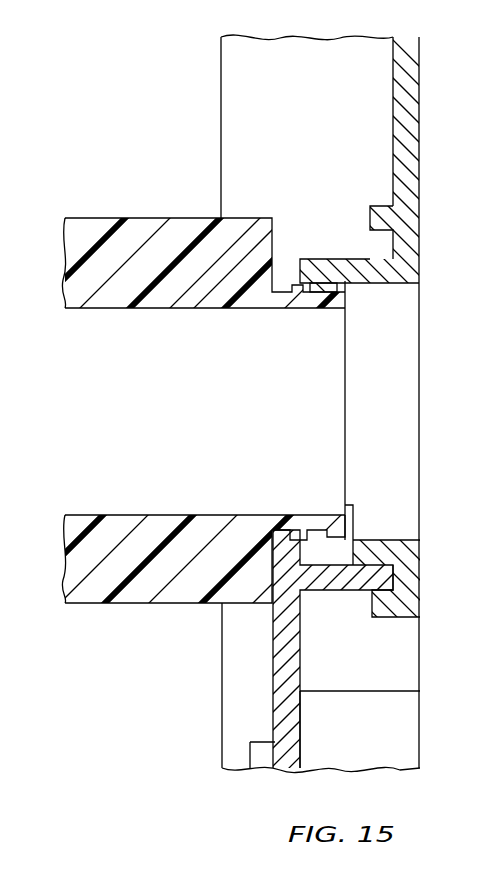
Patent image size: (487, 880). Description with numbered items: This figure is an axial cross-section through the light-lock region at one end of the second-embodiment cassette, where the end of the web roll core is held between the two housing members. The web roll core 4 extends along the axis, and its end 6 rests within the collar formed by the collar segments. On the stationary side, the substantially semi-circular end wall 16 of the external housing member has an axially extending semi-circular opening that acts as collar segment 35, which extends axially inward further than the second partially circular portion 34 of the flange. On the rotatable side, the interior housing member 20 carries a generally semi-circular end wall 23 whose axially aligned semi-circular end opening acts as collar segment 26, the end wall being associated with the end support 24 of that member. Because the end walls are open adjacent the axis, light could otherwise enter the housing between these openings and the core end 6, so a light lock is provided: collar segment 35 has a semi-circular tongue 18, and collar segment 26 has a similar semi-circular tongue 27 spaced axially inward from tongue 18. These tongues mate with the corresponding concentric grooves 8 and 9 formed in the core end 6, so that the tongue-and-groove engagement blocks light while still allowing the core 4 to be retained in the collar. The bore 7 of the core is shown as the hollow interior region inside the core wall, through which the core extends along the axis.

The web roll core 4 is at (90, 218).
The end of core 6 is at (194, 222).
The bore 7 is at (298, 310).
The groove 8 is at (318, 532).
The groove 9 is at (282, 283).
The end wall 16 is at (420, 183).
The tongue 18 is at (311, 262).
The interior housing member 20 is at (312, 673).
The end wall 23 is at (300, 733).
The end support 24 is at (343, 585).
The collar segment 26 is at (273, 547).
The tongue 27 is at (285, 525).
The second partially circular portion 34 is at (375, 275).
The collar segment 35 is at (330, 258).